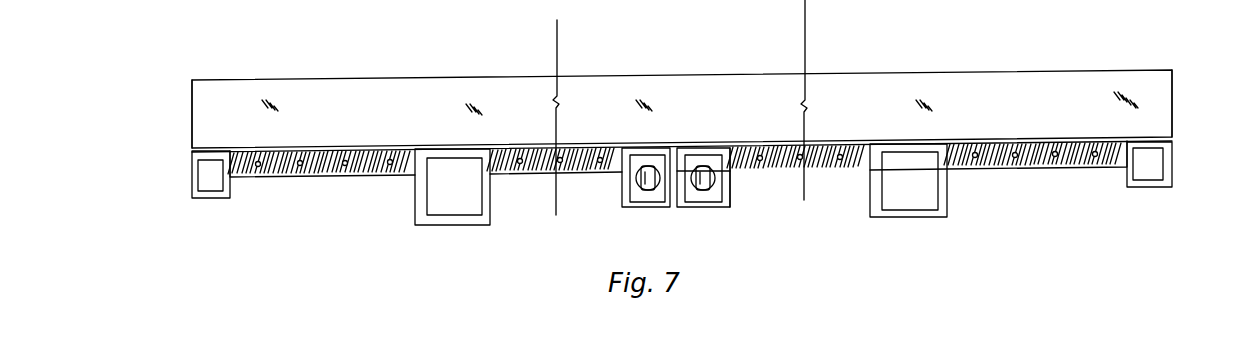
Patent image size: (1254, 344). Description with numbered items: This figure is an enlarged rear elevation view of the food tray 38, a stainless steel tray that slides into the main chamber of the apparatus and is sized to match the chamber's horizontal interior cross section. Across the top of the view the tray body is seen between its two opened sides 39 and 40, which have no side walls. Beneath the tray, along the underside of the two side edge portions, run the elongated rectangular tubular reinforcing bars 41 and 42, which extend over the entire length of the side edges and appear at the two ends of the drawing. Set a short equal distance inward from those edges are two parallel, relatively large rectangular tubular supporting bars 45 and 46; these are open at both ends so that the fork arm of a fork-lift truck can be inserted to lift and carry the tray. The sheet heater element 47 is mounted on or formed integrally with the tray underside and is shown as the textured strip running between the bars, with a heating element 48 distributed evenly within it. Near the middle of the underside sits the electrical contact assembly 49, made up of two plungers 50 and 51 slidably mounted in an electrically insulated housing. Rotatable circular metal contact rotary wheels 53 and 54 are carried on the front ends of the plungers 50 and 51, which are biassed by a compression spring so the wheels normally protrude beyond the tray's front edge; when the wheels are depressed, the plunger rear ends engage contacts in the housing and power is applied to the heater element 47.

The food tray 38 is at (907, 72).
The opened side 39 is at (1176, 84).
The opened side 40 is at (192, 105).
The rectangular tubular reinforcing bar 41 is at (1150, 182).
The rectangular tubular reinforcing bar 42 is at (388, 90).
The rectangular tubular supporting bar 45 is at (416, 207).
The rectangular tubular supporting bar 46 is at (905, 214).
The sheet heater element 47 is at (263, 166).
The heating element 48 is at (332, 172).
The electrical contact assembly 49 is at (733, 183).
The plunger 50 is at (630, 203).
The plunger 51 is at (689, 186).
The contact rotary wheel 53 is at (636, 182).
The contact rotary wheel 54 is at (715, 186).